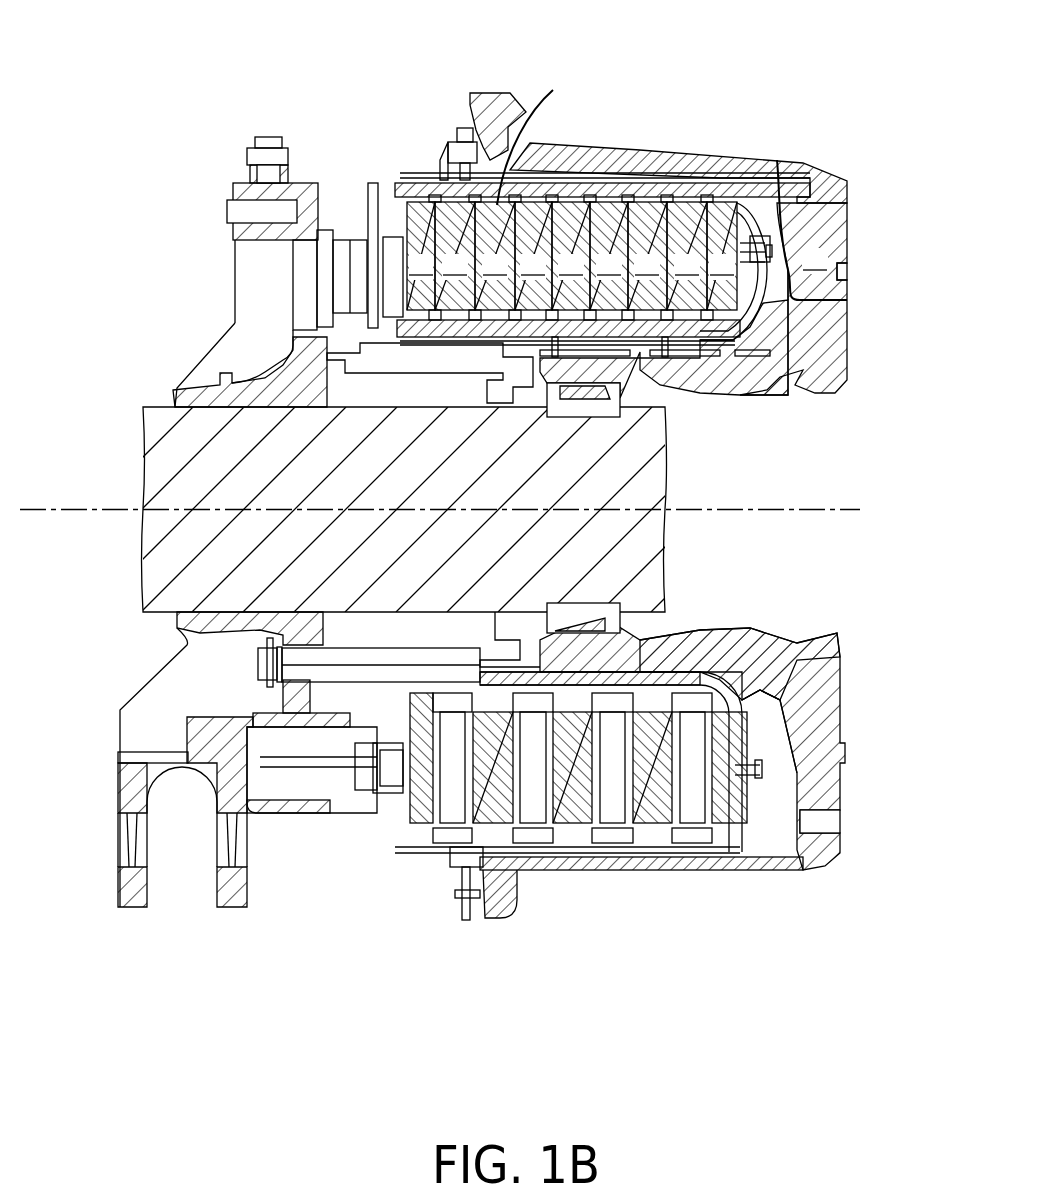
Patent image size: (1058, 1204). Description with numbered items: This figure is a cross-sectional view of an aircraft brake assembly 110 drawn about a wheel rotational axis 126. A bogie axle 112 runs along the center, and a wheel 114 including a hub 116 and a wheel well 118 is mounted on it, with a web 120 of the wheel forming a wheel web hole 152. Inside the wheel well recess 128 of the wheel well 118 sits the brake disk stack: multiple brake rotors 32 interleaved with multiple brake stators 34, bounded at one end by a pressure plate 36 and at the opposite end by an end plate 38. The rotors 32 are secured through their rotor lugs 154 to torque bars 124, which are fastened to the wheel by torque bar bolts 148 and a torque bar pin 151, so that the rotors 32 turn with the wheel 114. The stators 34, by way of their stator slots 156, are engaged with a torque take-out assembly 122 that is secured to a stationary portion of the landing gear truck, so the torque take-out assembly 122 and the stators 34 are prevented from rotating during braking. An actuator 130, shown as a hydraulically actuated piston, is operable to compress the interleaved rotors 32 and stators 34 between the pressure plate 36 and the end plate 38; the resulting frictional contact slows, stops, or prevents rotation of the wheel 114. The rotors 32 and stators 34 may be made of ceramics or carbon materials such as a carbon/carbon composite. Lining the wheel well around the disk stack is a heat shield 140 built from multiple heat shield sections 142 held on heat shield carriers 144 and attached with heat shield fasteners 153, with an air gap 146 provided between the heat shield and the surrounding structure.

The brake rotors 32 is at (571, 256).
The brake stators 34 is at (571, 256).
The pressure plate 36 is at (421, 256).
The end plate 38 is at (739, 256).
The brake assembly 110 is at (878, 95).
The bogie axle 112 is at (125, 458).
The wheel 114 is at (690, 140).
The hub 116 is at (650, 380).
The wheel well 118 is at (830, 170).
The web 120 is at (820, 735).
The torque take-out assembly 122 is at (458, 347).
The torque bars 124 is at (405, 183).
The wheel rotational axis 126 is at (725, 506).
The wheel well recess 128 is at (847, 300).
The actuator 130 is at (305, 830).
The heat shield 140 is at (422, 876).
The heat shield sections 142 is at (608, 167).
The heat shield carriers 144 is at (480, 885).
The air gap 146 is at (490, 195).
The torque bar bolts 148 is at (463, 160).
The torque bar pin 151 is at (777, 200).
The wheel web hole 152 is at (847, 232).
The heat shield fasteners 153 is at (463, 898).
The rotor lugs 154 is at (540, 207).
The stator slots 156 is at (510, 352).